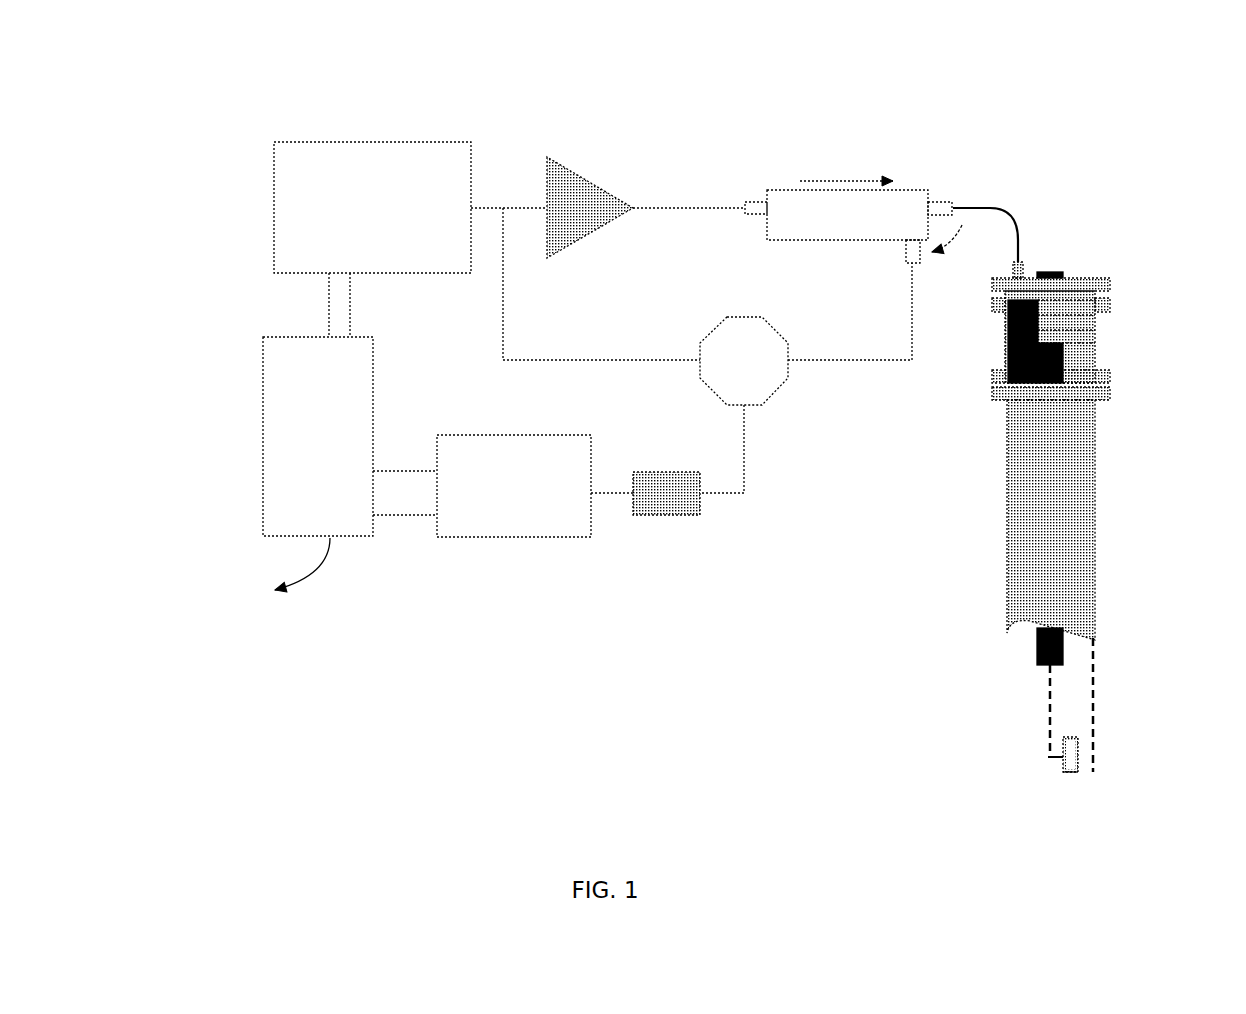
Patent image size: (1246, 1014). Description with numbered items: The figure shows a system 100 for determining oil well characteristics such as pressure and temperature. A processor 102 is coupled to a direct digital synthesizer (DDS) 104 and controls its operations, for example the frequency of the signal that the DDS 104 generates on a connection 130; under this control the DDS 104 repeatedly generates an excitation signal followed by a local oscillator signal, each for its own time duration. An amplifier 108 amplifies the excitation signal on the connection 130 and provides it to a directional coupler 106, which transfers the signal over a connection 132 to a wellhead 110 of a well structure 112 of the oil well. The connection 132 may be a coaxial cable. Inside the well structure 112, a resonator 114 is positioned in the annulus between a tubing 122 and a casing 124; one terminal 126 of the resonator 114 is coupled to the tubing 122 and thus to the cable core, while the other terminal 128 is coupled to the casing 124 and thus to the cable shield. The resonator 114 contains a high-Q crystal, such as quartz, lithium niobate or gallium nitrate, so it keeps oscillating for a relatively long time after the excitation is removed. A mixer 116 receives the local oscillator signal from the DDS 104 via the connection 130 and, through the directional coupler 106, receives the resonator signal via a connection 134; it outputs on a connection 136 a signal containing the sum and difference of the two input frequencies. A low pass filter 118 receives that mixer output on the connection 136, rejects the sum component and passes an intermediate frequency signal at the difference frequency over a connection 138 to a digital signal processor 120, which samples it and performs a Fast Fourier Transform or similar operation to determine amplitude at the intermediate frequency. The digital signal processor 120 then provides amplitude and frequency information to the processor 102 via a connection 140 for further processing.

The system 100 is at (1167, 97).
The processor 102 is at (260, 495).
The direct digital synthesizer 104 is at (335, 142).
The directional coupler 106 is at (776, 189).
The amplifier 108 is at (582, 178).
The wellhead 110 is at (988, 288).
The well structure 112 is at (1145, 362).
The resonator 114 is at (1072, 775).
The mixer 116 is at (768, 397).
The low pass filter 118 is at (680, 515).
The digital signal processor 120 is at (517, 538).
The tubing 122 is at (1048, 714).
The casing 124 is at (1095, 677).
The terminal 126 is at (1062, 757).
The terminal 128 is at (1080, 757).
The connection 130 is at (498, 205).
The connection 132 is at (1018, 222).
The connection 134 is at (837, 360).
The connection 136 is at (727, 496).
The connection 138 is at (612, 490).
The connection 140 is at (407, 516).